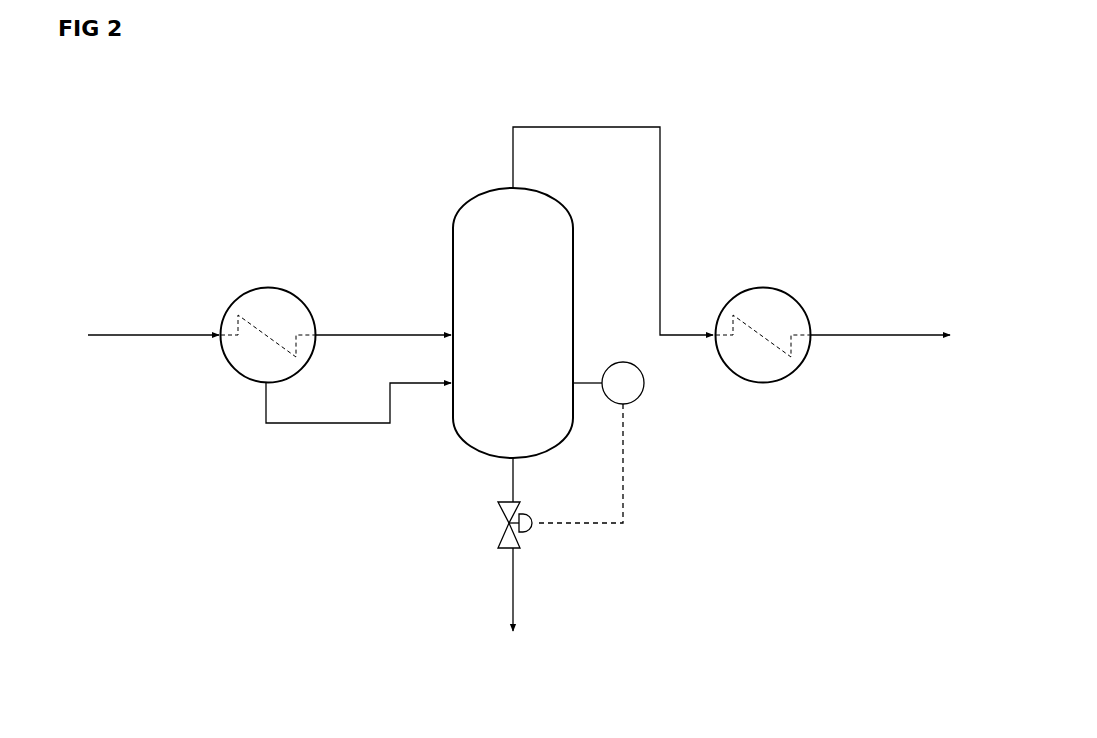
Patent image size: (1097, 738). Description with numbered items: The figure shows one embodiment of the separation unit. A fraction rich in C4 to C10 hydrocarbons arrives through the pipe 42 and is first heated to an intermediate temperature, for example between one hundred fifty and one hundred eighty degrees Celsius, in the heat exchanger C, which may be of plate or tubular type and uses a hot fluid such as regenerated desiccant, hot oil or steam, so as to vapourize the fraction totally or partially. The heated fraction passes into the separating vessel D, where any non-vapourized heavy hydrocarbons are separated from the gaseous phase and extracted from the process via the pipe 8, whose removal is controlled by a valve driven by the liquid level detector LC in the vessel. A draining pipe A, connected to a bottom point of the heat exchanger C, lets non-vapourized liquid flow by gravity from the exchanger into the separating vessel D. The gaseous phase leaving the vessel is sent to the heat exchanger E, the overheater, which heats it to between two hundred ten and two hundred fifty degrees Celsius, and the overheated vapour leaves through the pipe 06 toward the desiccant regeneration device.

The pipe 42 is at (153, 320).
The heat exchanger C is at (268, 317).
The pipe A is at (358, 424).
The separating vessel D is at (583, 314).
The liquid level detector LC is at (590, 442).
The pipe 8 is at (517, 566).
The heat exchanger E is at (763, 317).
The pipe 06 is at (880, 319).